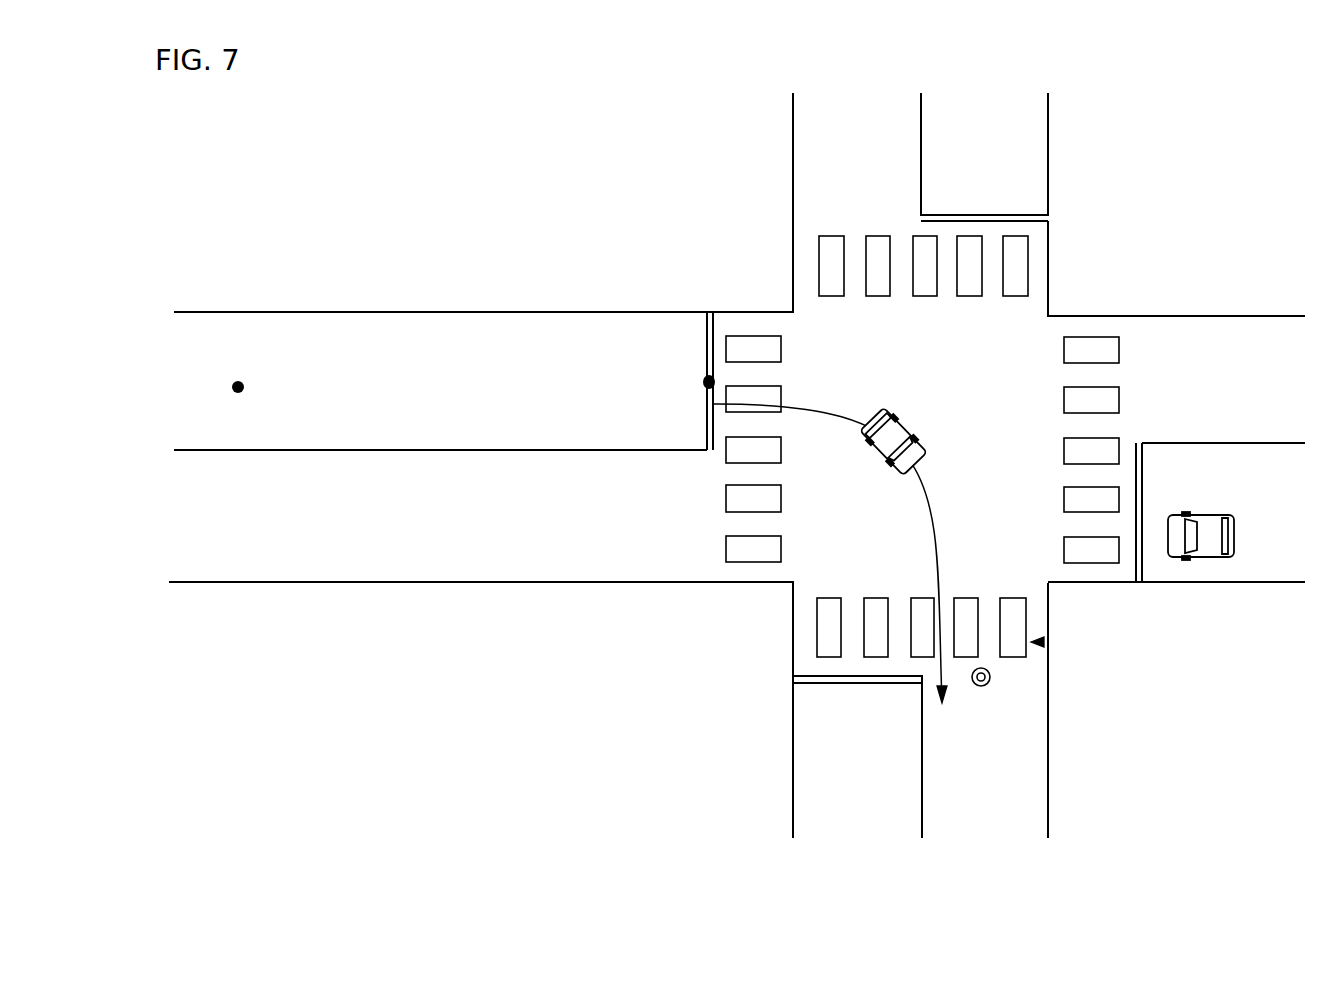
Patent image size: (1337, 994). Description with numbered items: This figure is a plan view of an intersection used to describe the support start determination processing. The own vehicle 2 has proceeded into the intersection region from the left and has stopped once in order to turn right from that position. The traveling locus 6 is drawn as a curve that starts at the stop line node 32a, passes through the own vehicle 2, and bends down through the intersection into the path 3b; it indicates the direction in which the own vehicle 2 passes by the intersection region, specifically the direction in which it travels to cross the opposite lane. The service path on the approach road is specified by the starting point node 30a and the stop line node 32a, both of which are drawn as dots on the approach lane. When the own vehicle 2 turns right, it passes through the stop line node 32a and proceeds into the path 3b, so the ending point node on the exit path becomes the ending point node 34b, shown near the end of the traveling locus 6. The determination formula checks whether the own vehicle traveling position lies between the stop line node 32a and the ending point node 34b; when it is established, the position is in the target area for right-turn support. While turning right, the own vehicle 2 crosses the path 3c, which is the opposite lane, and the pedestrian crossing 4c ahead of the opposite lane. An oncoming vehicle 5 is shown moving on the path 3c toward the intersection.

The own vehicle 2 is at (905, 419).
The oncoming vehicle 5 is at (1211, 513).
The traveling locus 6 is at (932, 505).
The starting point node 30a is at (241, 378).
The stop line node 32a is at (703, 379).
The ending point node 34b is at (987, 687).
The path 3b is at (1030, 763).
The path 3c is at (1262, 566).
The pedestrian crossing 4c is at (1043, 642).